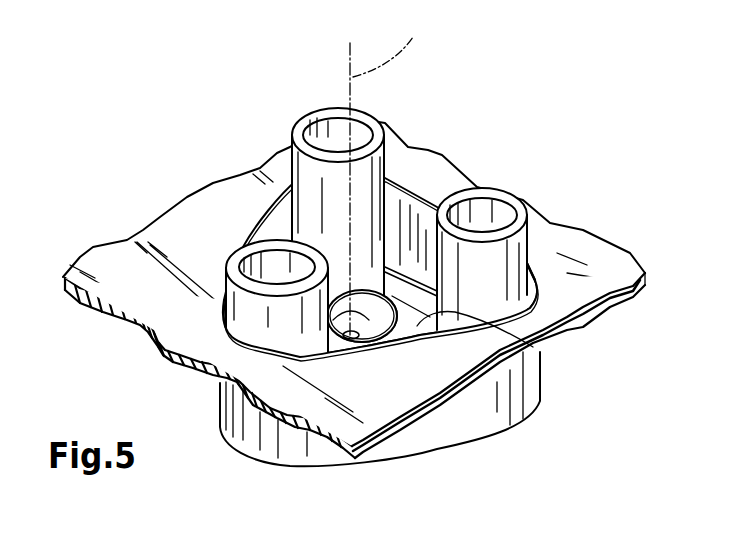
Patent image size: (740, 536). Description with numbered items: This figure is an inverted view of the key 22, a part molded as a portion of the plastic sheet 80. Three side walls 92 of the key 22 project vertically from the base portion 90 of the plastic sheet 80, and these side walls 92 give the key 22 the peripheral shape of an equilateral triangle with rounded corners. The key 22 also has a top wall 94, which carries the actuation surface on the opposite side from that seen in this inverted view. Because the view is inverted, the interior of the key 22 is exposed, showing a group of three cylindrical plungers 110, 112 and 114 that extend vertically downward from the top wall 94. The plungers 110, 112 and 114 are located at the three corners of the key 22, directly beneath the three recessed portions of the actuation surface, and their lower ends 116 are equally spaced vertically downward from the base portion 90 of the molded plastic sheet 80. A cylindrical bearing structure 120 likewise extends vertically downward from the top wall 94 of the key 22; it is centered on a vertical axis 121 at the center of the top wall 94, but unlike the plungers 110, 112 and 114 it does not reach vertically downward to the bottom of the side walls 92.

The key 22 is at (220, 397).
The plastic sheet 80 is at (83, 263).
The base portion 90 is at (617, 253).
The side walls 92 is at (410, 227).
The top wall 94 is at (533, 347).
The cylindrical plunger 110 is at (255, 307).
The cylindrical plunger 112 is at (307, 165).
The cylindrical plunger 114 is at (510, 253).
The lower ends 116 is at (320, 107).
The cylindrical bearing structure 120 is at (400, 342).
The vertical axis 121 is at (395, 172).